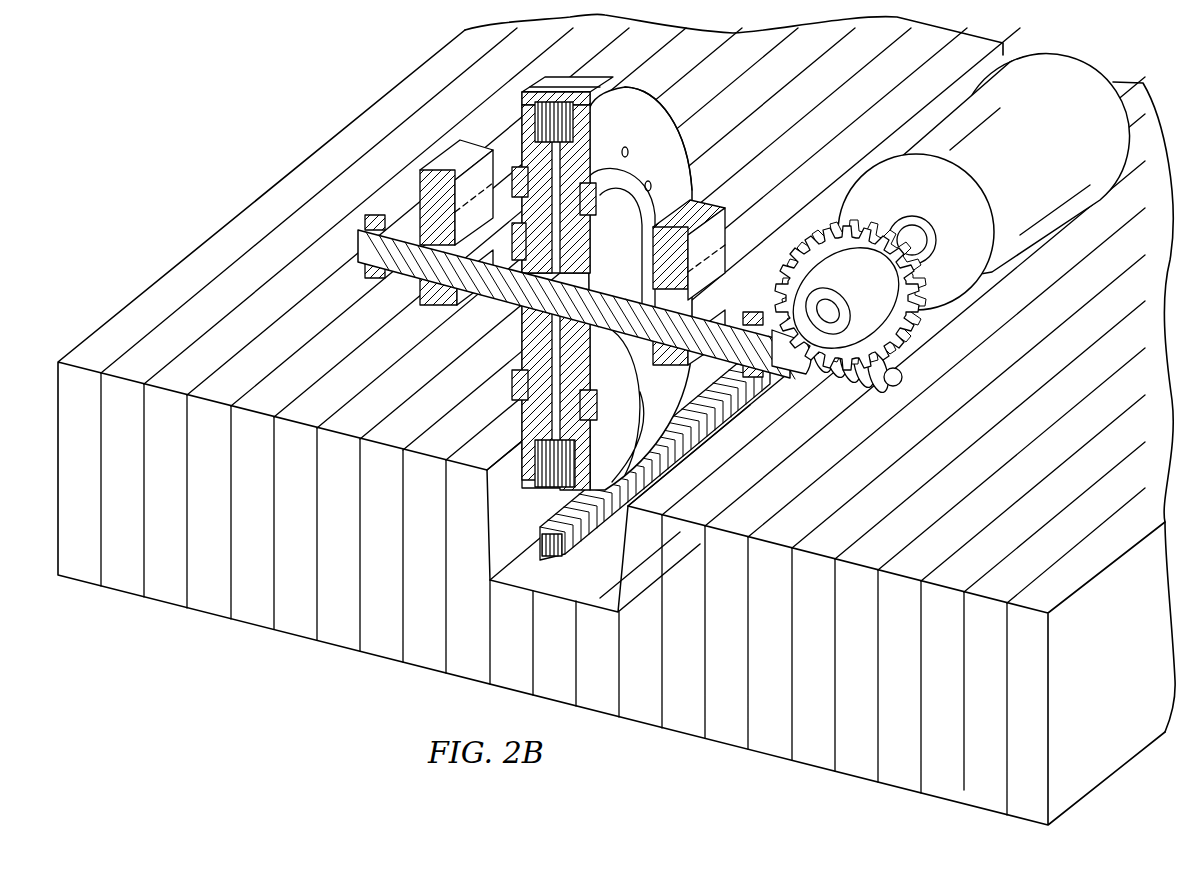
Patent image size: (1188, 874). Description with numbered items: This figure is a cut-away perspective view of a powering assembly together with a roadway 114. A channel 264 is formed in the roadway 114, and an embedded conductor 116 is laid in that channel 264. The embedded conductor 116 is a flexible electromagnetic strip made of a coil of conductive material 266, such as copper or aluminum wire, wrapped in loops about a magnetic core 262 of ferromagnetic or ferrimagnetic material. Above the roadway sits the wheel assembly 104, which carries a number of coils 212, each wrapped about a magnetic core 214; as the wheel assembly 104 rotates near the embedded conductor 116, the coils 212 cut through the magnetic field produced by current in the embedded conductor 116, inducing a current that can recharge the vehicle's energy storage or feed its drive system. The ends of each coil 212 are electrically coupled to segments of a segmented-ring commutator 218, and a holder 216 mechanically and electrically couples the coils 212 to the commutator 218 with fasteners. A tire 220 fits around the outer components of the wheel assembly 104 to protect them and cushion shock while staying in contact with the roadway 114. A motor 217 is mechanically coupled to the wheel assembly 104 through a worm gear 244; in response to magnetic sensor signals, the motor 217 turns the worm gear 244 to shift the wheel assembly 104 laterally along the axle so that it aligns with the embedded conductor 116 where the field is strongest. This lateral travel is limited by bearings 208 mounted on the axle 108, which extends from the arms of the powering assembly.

The wheel assembly 104 is at (676, 114).
The arm 108 is at (428, 300).
The roadway 114 is at (1138, 740).
The embedded conductor 116 is at (533, 578).
The bearing 208 is at (383, 213).
The coil 212 is at (568, 95).
The magnetic core 214 is at (545, 127).
The holder 216 is at (690, 150).
The motor 217 is at (1057, 83).
The segmented-ring commutator 218 is at (625, 190).
The tire 220 is at (652, 93).
The worm gear 244 is at (918, 365).
The magnetic core 262 is at (543, 533).
The channel 264 is at (568, 586).
The coil of conductive material 266 is at (600, 535).